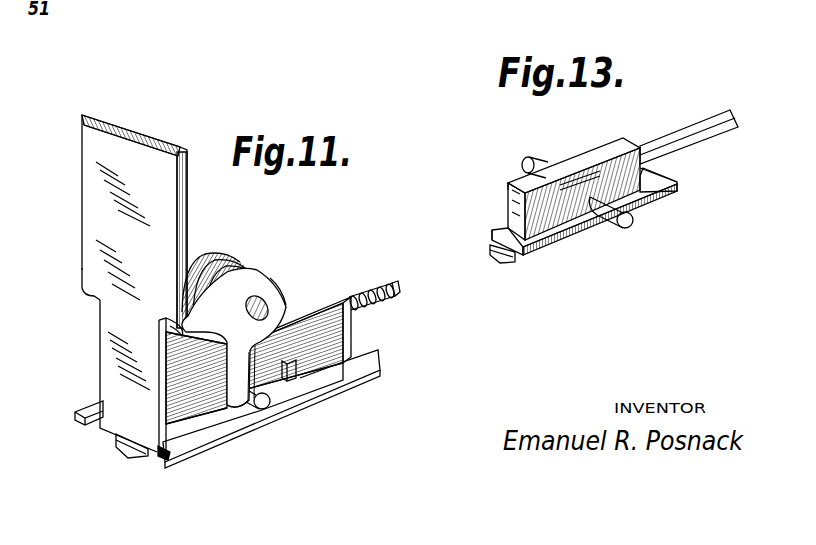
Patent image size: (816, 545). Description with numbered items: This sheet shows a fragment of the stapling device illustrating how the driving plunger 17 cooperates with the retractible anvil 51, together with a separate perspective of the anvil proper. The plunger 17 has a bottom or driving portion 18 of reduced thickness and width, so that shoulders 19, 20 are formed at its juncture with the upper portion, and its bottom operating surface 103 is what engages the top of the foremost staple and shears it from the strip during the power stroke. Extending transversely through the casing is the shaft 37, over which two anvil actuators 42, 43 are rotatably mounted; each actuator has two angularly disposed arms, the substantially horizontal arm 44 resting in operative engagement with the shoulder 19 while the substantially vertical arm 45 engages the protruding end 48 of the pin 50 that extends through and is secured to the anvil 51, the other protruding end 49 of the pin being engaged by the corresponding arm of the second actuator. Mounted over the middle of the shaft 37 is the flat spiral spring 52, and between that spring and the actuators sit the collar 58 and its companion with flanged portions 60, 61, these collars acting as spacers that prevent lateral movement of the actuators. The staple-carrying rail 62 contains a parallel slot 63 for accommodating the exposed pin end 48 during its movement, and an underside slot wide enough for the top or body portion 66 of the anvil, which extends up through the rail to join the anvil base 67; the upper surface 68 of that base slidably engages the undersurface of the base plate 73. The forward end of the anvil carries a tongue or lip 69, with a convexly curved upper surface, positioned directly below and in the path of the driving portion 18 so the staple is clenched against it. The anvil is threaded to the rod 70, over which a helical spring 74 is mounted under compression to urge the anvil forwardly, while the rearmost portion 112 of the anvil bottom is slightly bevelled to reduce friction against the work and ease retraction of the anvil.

In FIG. 11, the driving plunger 17 is at (92, 209).
In FIG. 11, the shoulder 20 is at (90, 284).
In FIG. 11, the bottom or driving portion of the plunger 18 is at (112, 363).
In FIG. 11, the bottom or operating surface of the plunger 103 is at (108, 426).
In FIG. 11, the tongue or lip 69 is at (128, 454).
In FIG. 13, the tongue or lip 69 is at (497, 253).
In FIG. 11, the anvil 51 is at (152, 456).
In FIG. 13, the anvil 51 is at (512, 178).
In FIG. 11, the shoulder 19 is at (172, 325).
In FIG. 11, the anvil actuator 43 is at (190, 246).
In FIG. 11, the flanged portion 61 is at (200, 256).
In FIG. 11, the flat spiral spring 52 is at (216, 265).
In FIG. 11, the flanged portion 60 is at (234, 268).
In FIG. 11, the collar 58 is at (250, 274).
In FIG. 11, the arm 44 is at (193, 332).
In FIG. 11, the staple-carrying member or rail 62 is at (340, 339).
In FIG. 11, the base plate 73 is at (376, 378).
In FIG. 11, the slot 63 is at (294, 372).
In FIG. 11, the protruding end of the pin 48 is at (268, 404).
In FIG. 13, the protruding end of the pin 48 is at (633, 224).
In FIG. 11, the anvil actuator 42 is at (272, 290).
In FIG. 11, the arm 45 is at (244, 408).
In FIG. 11, the shaft 37 is at (284, 296).
In FIG. 11, the helical spring 74 is at (368, 292).
In FIG. 11, the rod 70 is at (399, 290).
In FIG. 13, the rod 70 is at (672, 141).
In FIG. 13, the top or body portion of the anvil 66 is at (507, 206).
In FIG. 13, the protruding end of the pin 49 is at (534, 160).
In FIG. 13, the rearmost portion of the bottom of the anvil 112 is at (668, 190).
In FIG. 13, the base of the anvil 67 is at (573, 240).
In FIG. 13, the upper surface of the anvil base 68 is at (553, 248).
In FIG. 13, the pin 50 is at (608, 226).